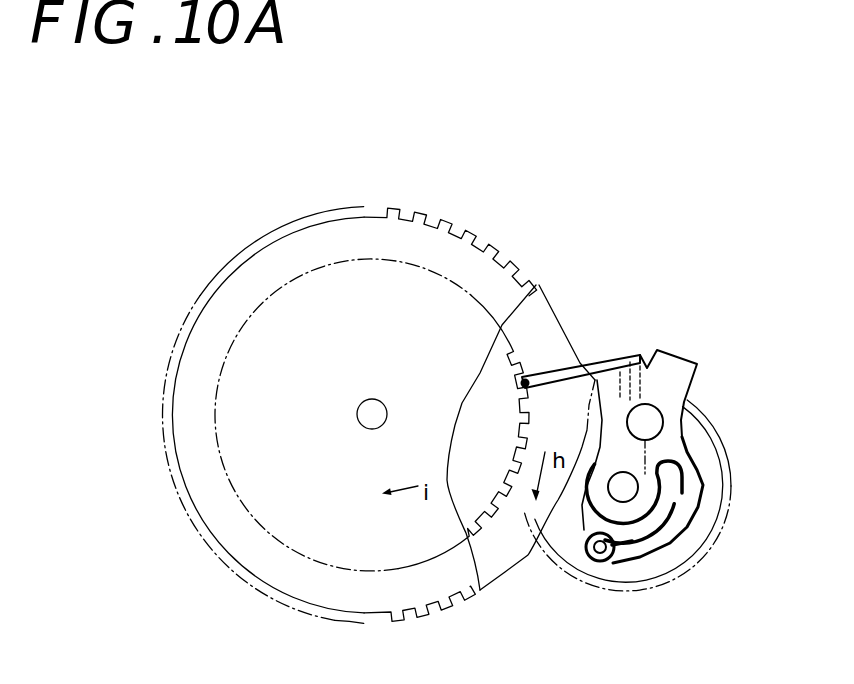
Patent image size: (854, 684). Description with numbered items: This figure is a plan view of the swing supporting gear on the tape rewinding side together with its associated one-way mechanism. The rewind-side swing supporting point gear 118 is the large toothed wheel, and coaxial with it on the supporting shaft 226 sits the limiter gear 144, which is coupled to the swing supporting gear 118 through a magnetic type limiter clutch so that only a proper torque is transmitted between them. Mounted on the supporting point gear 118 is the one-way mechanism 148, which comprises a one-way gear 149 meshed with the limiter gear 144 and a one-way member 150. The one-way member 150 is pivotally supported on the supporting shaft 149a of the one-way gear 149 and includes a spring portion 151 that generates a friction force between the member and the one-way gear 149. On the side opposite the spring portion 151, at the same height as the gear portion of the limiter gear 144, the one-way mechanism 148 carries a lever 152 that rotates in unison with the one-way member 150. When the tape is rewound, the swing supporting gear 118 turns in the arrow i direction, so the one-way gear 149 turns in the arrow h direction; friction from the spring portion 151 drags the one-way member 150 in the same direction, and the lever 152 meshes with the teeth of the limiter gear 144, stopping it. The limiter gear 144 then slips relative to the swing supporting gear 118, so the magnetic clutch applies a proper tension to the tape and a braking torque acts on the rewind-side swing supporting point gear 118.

The rewind-side swing supporting point gear 118 is at (418, 228).
The supporting shaft 226 is at (372, 399).
The limiter gear 144 is at (503, 375).
The lever 152 is at (557, 362).
The one-way member 150 is at (680, 360).
The one-way mechanism 148 is at (718, 391).
The one-way gear 149 is at (708, 470).
The supporting shaft of the one-way gear 149a is at (627, 490).
The spring portion 151 is at (588, 556).